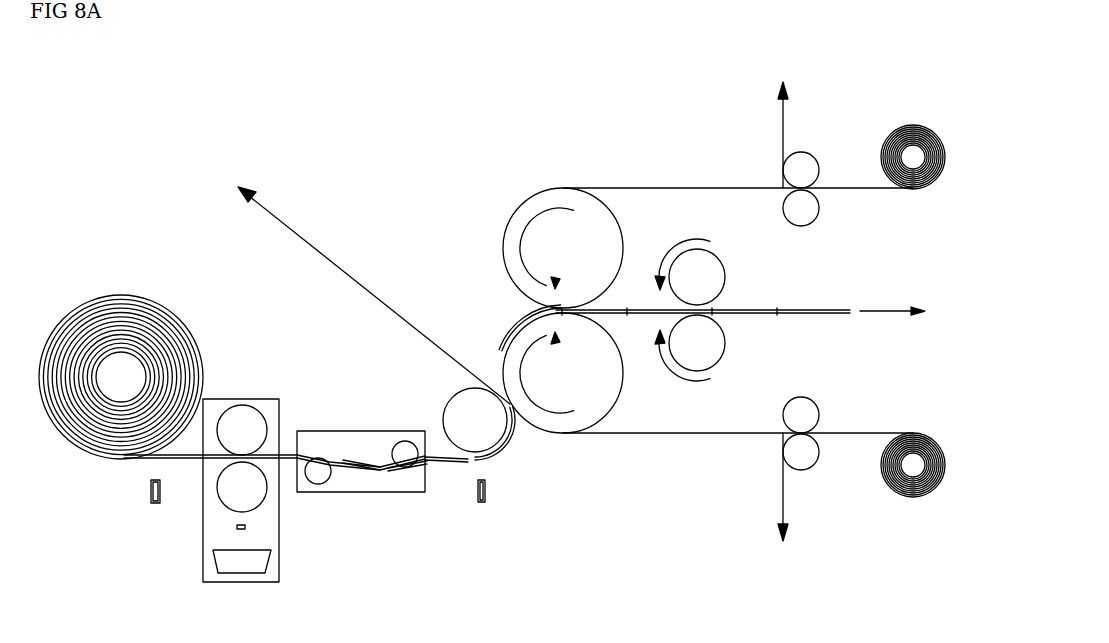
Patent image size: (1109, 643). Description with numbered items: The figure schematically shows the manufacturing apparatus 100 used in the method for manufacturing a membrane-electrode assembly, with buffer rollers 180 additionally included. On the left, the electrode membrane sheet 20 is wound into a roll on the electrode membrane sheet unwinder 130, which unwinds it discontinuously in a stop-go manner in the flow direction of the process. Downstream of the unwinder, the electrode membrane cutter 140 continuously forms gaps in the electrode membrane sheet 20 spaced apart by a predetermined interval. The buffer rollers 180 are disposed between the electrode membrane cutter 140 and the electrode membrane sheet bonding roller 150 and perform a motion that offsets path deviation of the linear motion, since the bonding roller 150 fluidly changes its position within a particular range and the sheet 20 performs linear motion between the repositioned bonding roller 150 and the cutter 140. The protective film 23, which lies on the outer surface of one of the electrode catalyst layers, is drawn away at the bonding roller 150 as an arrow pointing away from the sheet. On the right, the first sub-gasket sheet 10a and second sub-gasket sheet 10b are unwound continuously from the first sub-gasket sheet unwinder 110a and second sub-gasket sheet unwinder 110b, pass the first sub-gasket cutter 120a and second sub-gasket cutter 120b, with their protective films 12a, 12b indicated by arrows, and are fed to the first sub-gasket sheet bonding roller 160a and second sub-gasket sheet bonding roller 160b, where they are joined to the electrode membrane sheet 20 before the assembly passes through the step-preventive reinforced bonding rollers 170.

The manufacturing apparatus 100 is at (147, 140).
The electrode membrane sheet unwinder 130 is at (132, 296).
The electrode membrane sheet 20 is at (437, 460).
The electrode membrane cutter 140 is at (279, 560).
The buffer rollers 180 is at (358, 431).
The electrode membrane sheet bonding roller 150 is at (500, 438).
The protective film 23 is at (374, 295).
The first sub-gasket sheet bonding roller 160a is at (582, 418).
The second sub-gasket sheet bonding roller 160b is at (518, 203).
The step-preventive reinforced bonding rollers 170 is at (720, 343).
The first sub-gasket sheet 10a is at (718, 435).
The second sub-gasket sheet 10b is at (717, 188).
The protective film 12a is at (785, 507).
The protective film 12b is at (783, 115).
The first sub-gasket sheet unwinder 110a is at (915, 500).
The second sub-gasket sheet unwinder 110b is at (913, 123).
The first sub-gasket cutter 120a is at (813, 404).
The second sub-gasket cutter 120b is at (813, 212).